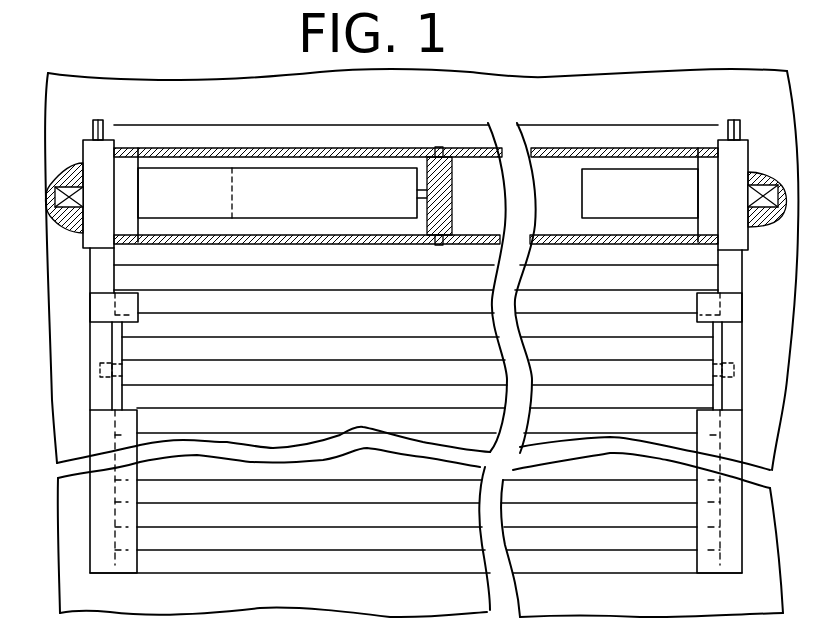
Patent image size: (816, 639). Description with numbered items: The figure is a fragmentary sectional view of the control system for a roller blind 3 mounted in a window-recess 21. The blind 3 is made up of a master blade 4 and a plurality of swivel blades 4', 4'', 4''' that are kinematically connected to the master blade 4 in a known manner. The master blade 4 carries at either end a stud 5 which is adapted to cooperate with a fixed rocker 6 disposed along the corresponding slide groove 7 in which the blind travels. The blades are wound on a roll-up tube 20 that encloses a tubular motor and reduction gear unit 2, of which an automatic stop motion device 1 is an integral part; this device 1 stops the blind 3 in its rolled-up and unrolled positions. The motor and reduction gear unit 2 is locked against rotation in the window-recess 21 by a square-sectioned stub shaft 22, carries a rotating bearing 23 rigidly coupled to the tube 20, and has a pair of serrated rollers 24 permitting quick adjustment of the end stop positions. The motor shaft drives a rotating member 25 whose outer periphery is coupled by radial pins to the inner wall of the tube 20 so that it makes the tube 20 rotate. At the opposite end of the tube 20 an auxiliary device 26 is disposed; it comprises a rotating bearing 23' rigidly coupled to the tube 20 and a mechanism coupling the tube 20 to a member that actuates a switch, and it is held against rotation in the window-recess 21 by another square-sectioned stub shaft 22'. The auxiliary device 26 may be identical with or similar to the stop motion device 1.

The automatic stop motion device 1 is at (175, 188).
The tubular motor and reduction gear unit 2 is at (270, 192).
The blind 3 is at (298, 283).
The master blade 4 is at (417, 376).
The swivel blade 4' is at (425, 399).
The swivel blade 4'' is at (417, 494).
The swivel blade 4''' is at (417, 518).
The stud 5 is at (102, 380).
The rocker 6 is at (107, 345).
The slide groove 7 is at (100, 510).
The roll-up tube 20 is at (375, 150).
The window-recess 21 is at (84, 113).
The square-sectioned stub shaft 22 is at (65, 188).
The square-sectioned stub shaft 22' is at (771, 220).
The rotating bearing 23 is at (139, 171).
The rotating bearing 23' is at (709, 172).
The serrated rollers 24 is at (103, 130).
The rotating member 25 is at (447, 195).
The auxiliary device 26 is at (620, 190).